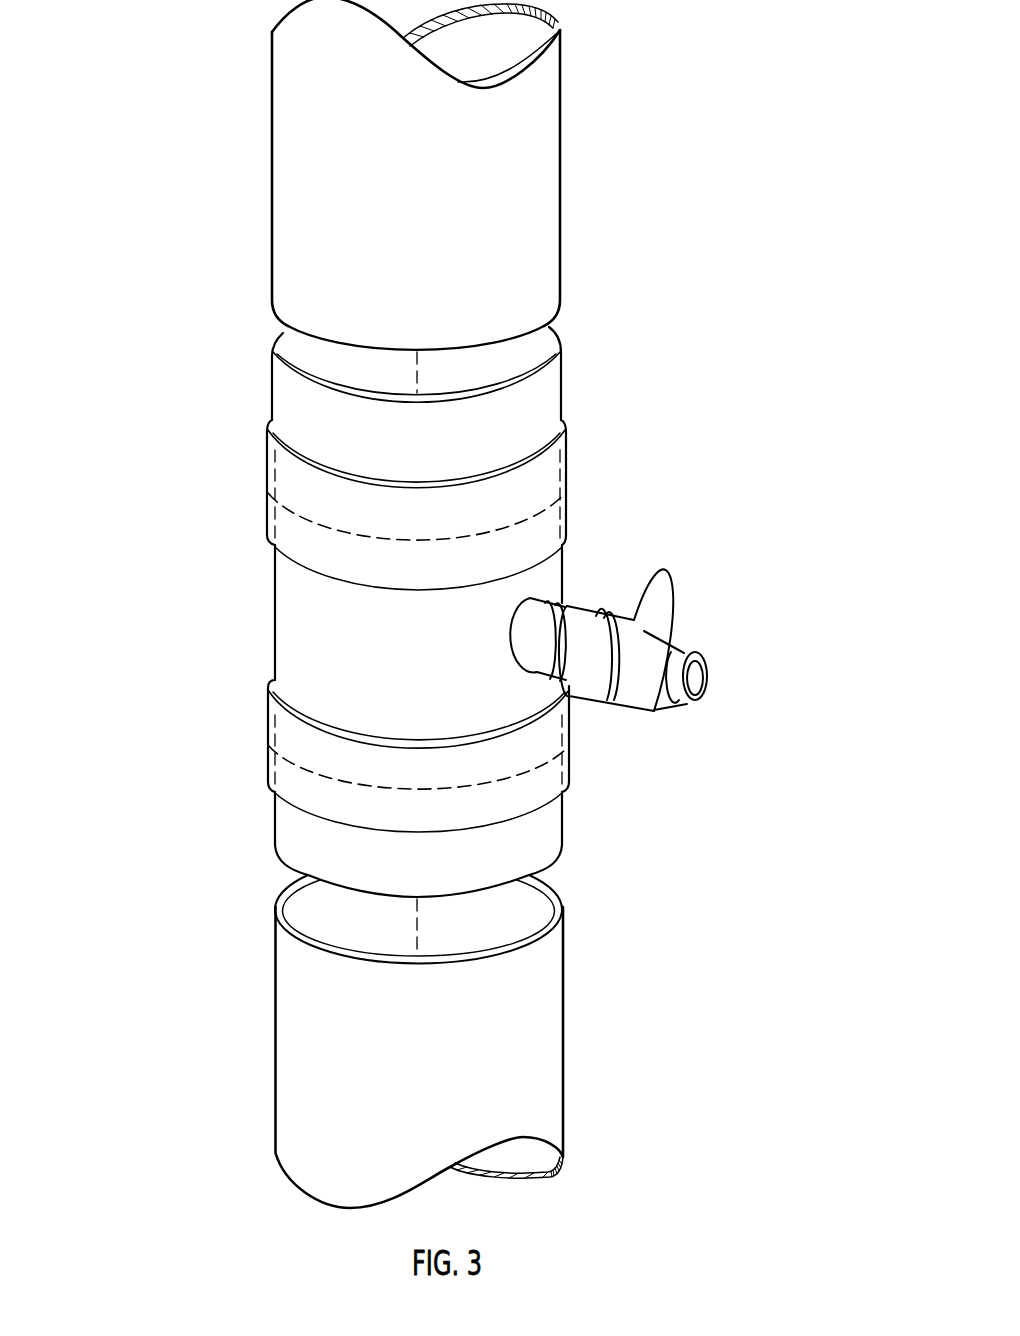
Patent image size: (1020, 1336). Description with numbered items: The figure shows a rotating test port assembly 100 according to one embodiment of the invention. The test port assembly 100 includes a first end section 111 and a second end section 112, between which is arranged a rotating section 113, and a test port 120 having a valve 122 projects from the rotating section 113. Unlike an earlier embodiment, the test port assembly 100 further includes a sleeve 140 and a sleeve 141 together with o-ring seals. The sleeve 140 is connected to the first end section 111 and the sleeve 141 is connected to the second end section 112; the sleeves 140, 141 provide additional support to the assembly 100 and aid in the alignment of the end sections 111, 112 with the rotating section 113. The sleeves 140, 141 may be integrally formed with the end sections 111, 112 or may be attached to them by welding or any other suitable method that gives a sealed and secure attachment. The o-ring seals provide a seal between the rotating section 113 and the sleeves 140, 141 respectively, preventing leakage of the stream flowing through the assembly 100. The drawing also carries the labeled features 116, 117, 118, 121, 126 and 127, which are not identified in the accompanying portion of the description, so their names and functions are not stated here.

The test port assembly 100 is at (632, 336).
The first end section 111 is at (540, 410).
The second end section 112 is at (542, 838).
The rotating section 113 is at (550, 586).
The first end opening 116 is at (500, 338).
The pipe 117 is at (565, 181).
The second end opening 118 is at (567, 908).
The test port 120 is at (630, 610).
The boss 121 is at (540, 617).
The valve 122 is at (593, 632).
The internal stop ring (hidden) 126 is at (268, 492).
The internal stop ring (hidden) 127 is at (268, 743).
The sleeve 140 is at (569, 455).
The sleeve 141 is at (566, 789).